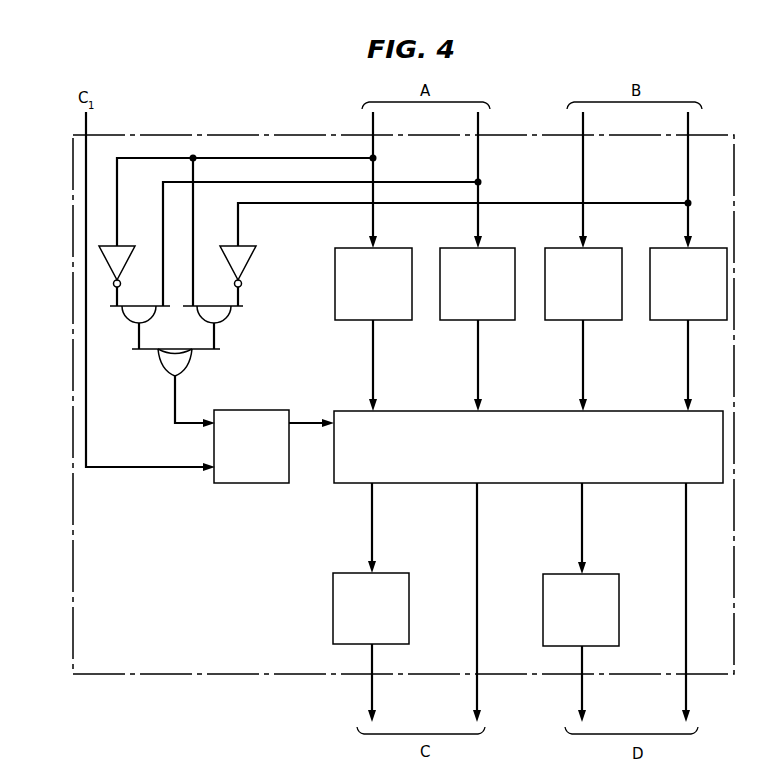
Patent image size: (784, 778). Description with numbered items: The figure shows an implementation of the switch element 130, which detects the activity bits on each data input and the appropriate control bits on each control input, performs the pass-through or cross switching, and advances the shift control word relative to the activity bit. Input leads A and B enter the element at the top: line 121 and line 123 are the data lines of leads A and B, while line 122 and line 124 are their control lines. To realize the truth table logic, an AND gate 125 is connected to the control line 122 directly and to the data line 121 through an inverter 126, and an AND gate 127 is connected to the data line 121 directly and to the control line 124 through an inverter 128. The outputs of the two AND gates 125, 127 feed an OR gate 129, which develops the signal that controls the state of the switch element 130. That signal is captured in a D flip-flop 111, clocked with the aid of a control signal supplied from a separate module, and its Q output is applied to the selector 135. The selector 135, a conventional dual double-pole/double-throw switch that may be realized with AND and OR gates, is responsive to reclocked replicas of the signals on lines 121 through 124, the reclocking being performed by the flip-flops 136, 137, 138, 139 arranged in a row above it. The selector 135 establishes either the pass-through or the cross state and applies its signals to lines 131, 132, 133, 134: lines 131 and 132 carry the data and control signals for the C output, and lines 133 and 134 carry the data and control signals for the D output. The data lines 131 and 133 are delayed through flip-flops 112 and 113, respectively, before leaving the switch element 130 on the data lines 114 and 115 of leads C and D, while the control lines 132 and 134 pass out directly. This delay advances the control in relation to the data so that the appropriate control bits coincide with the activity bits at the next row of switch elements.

The D flip-flop 111 is at (253, 411).
The flip-flop 112 is at (359, 573).
The flip-flop 113 is at (569, 574).
The data line 114 is at (372, 662).
The data line 115 is at (582, 663).
The data line 121 is at (376, 150).
The control line 122 is at (481, 150).
The data line 123 is at (586, 154).
The control line 124 is at (685, 152).
The AND gate 125 is at (127, 318).
The inverter 126 is at (126, 264).
The AND gate 127 is at (226, 318).
The inverter 128 is at (247, 262).
The OR gate 129 is at (160, 362).
The switch element 130 is at (717, 125).
The line 131 is at (372, 510).
The control line 132 is at (477, 510).
The line 133 is at (582, 510).
The control line 134 is at (686, 510).
The selector 135 is at (362, 410).
The flip-flop 136 is at (362, 247).
The flip-flop 137 is at (467, 247).
The flip-flop 138 is at (572, 247).
The flip-flop 139 is at (676, 247).